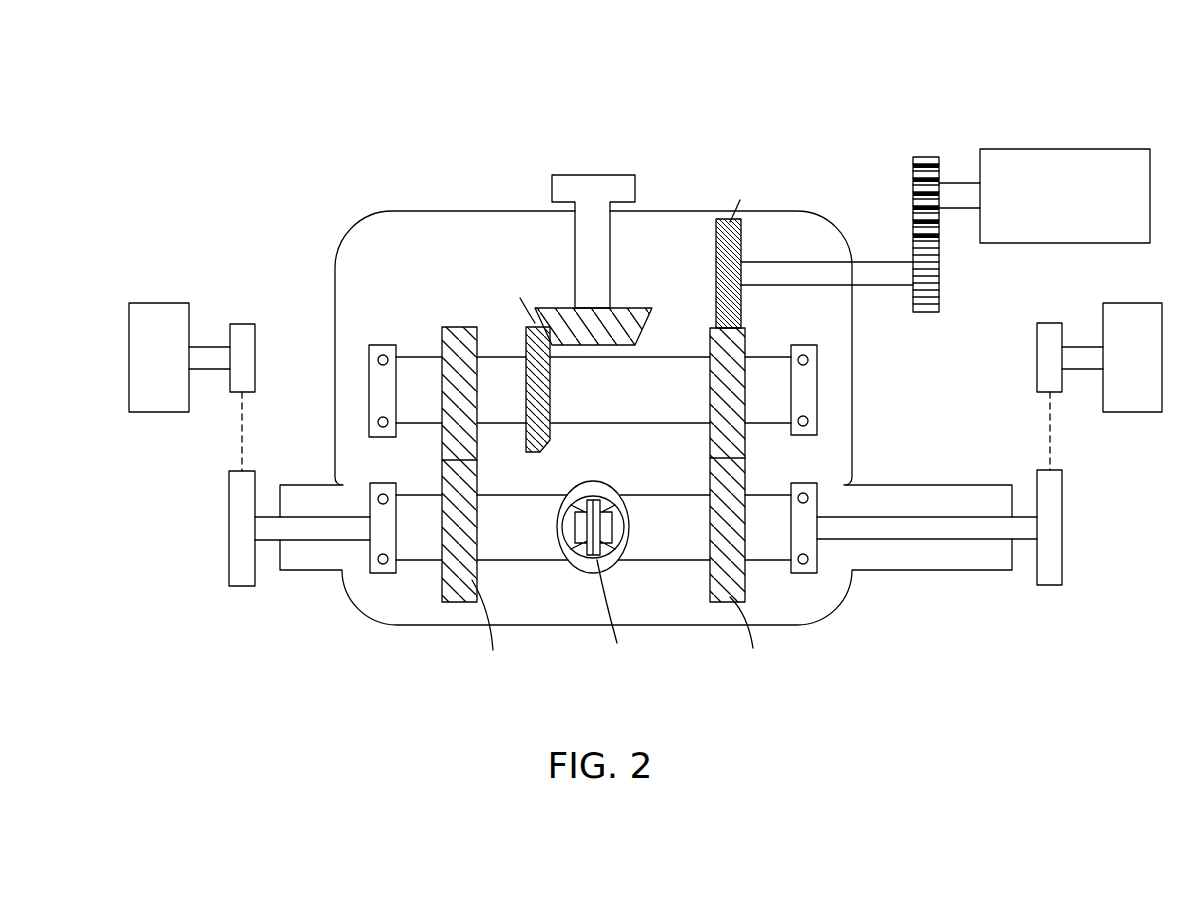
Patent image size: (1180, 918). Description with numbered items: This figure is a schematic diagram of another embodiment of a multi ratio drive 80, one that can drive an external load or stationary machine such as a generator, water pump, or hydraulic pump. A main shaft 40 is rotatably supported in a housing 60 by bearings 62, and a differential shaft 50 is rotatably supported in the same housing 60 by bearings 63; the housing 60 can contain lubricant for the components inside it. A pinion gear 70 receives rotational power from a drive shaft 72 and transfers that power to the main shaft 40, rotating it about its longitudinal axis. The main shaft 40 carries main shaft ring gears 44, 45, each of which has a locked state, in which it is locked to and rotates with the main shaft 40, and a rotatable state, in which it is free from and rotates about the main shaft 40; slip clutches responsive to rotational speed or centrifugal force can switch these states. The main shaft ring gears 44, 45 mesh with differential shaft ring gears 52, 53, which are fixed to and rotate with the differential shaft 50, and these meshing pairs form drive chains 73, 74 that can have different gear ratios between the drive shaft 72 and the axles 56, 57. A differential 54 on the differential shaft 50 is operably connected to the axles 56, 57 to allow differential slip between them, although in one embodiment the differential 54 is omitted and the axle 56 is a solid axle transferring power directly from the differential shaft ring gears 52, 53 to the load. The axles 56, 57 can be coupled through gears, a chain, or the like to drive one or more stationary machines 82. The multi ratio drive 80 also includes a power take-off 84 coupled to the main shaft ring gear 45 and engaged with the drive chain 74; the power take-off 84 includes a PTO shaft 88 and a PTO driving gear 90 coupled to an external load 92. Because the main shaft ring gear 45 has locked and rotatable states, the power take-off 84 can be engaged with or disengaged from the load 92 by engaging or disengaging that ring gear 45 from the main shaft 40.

The main shaft 40 is at (416, 362).
The main shaft ring gear 44 is at (464, 340).
The main shaft ring gear 45 is at (732, 344).
The differential shaft 50 is at (422, 555).
The differential shaft ring gear 52 is at (507, 179).
The differential shaft ring gear 53 is at (748, 128).
The differential 54 is at (593, 334).
The axle 56 is at (260, 522).
The axle 57 is at (1030, 532).
The housing 60 is at (775, 627).
The bearings 62 is at (368, 378).
The bearings 63 is at (378, 577).
The pinion gear 70 is at (572, 318).
The drive shaft 72 is at (598, 182).
The drive chain 73 is at (455, 613).
The drive chain 74 is at (720, 613).
The multi ratio drive 80 is at (445, 152).
The stationary machine 82 is at (160, 312).
The power take-off 84 is at (794, 252).
The PTO shaft 88 is at (866, 272).
The PTO driving gear 90 is at (934, 257).
The external load 92 is at (1045, 160).